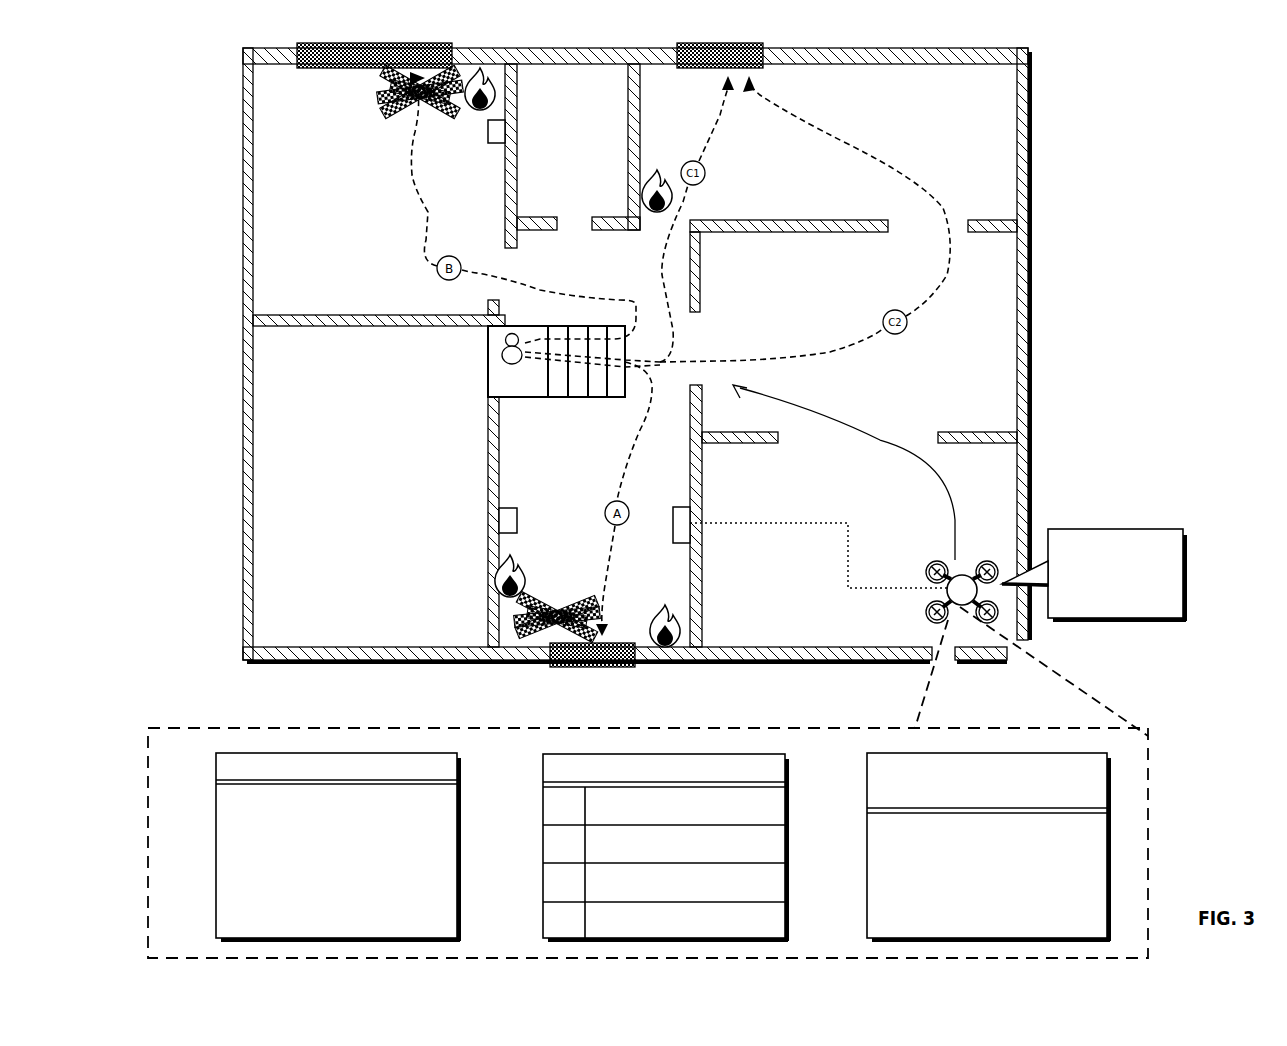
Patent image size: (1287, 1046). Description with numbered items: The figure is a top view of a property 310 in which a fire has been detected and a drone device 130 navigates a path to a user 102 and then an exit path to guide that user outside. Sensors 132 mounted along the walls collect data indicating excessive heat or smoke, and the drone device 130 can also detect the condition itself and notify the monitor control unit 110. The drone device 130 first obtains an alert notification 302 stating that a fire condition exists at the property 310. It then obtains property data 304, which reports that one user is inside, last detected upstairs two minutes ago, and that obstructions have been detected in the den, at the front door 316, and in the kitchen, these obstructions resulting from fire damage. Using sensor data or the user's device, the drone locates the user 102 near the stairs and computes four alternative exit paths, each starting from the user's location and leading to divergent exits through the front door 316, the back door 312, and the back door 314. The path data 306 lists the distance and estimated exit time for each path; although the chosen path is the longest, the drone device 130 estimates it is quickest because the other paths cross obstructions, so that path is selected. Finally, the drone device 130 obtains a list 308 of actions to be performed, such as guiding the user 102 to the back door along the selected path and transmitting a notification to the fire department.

The property 310 is at (243, 108).
The back door 312 is at (350, 68).
The back door 314 is at (718, 68).
The front door 316 is at (580, 667).
The sensors 132 is at (497, 143).
The monitor control unit 110 is at (687, 507).
The user 102 is at (502, 358).
The drone device 130 is at (933, 560).
The alert notification 302 is at (1118, 527).
The property data 304 is at (215, 820).
The path data 306 is at (543, 820).
The list of actions to be performed 308 is at (867, 820).